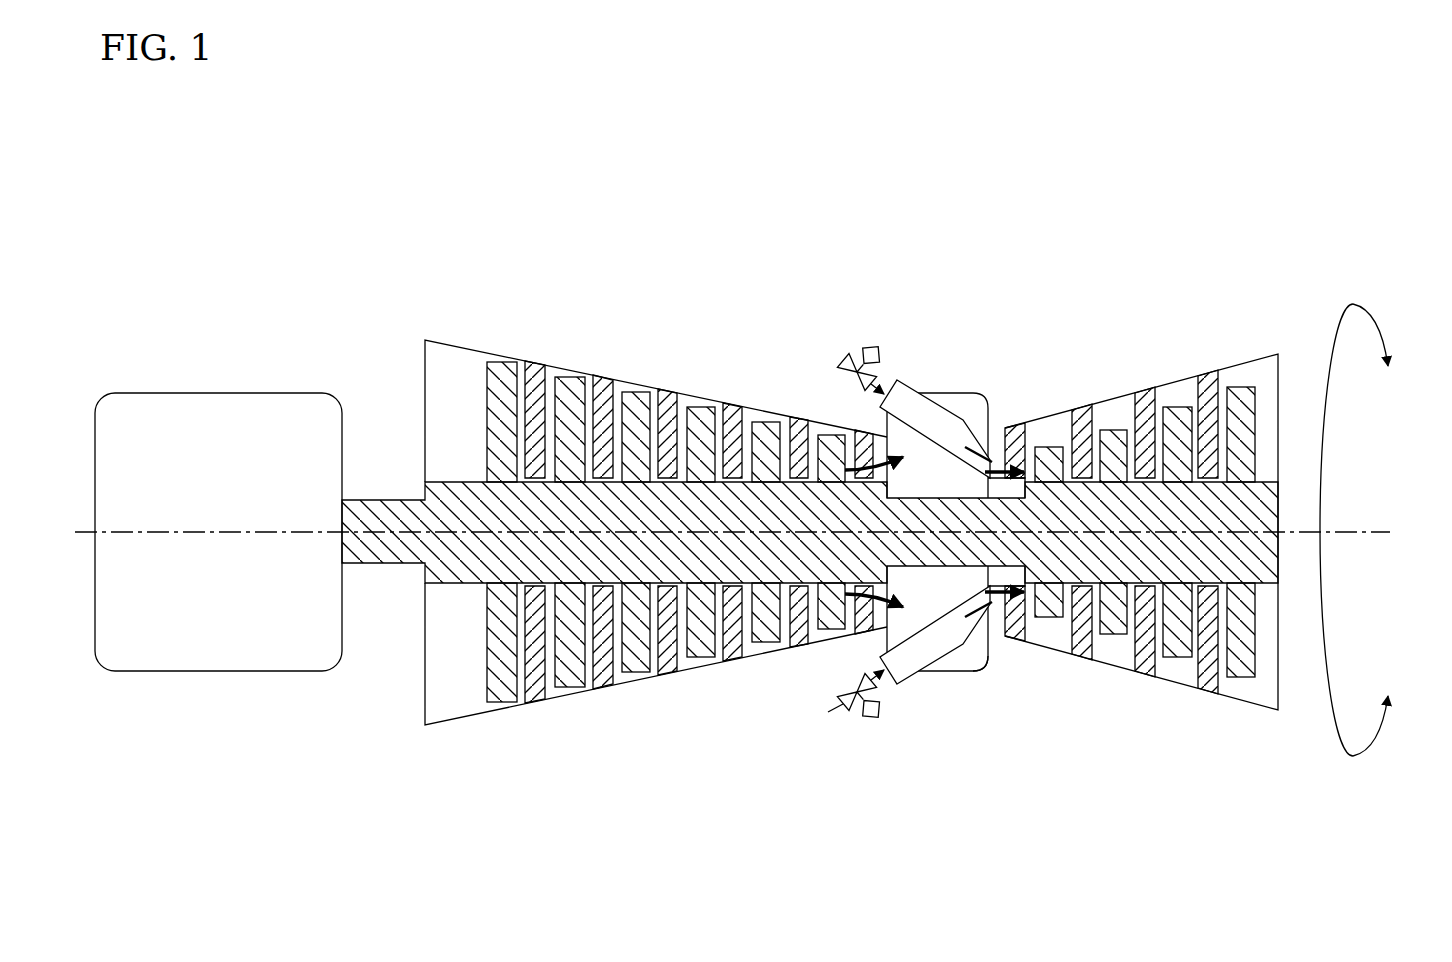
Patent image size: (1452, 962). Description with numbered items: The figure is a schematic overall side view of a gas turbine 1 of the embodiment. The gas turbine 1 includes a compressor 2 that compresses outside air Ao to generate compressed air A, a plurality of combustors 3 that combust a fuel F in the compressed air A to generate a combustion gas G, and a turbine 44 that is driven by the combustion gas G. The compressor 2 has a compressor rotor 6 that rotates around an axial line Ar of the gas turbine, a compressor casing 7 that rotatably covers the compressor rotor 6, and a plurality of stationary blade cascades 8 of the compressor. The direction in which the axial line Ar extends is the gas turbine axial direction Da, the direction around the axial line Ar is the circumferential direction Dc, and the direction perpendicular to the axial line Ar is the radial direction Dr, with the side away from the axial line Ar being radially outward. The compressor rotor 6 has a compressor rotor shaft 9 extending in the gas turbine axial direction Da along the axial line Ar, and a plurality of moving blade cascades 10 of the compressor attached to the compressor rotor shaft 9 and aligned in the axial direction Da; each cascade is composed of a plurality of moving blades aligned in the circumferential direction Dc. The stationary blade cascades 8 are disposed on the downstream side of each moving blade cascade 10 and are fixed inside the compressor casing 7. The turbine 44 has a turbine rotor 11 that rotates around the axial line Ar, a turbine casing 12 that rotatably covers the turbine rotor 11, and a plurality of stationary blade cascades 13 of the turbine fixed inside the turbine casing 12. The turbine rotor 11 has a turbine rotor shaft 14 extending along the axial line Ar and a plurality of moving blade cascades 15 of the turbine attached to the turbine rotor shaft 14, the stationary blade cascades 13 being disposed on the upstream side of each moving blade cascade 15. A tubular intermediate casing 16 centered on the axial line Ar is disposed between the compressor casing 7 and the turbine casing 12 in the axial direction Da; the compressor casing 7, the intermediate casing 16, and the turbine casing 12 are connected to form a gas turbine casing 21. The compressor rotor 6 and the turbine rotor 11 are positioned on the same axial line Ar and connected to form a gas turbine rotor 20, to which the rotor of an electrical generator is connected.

The gas turbine 1 is at (345, 198).
The compressor 2 is at (625, 262).
The combustor 3 is at (902, 383).
The compressor rotor 6 is at (608, 500).
The compressor casing 7 is at (523, 362).
The stationary blade cascades of the compressor 8 is at (665, 655).
The compressor rotor shaft 9 is at (458, 580).
The moving blade cascades of the compressor 10 is at (508, 690).
The turbine rotor 11 is at (1113, 495).
The turbine casing 12 is at (1228, 367).
The stationary blade cascades of the turbine 13 is at (1082, 640).
The turbine rotor shaft 14 is at (1265, 578).
The moving blade cascades of the turbine 15 is at (1175, 650).
The intermediate casing 16 is at (960, 392).
The gas turbine rotor 20 is at (938, 566).
The gas turbine casing 21 is at (985, 666).
The turbine 44 is at (1240, 264).
The compressed air A is at (885, 445).
The fuel F is at (843, 360).
The combustion gas G is at (1003, 430).
The outside air Ao is at (425, 337).
The axial line Ar is at (1367, 530).
The gas turbine axial direction Da is at (838, 917).
The circumferential direction Dc is at (1385, 330).
The radial direction Dr is at (1356, 580).